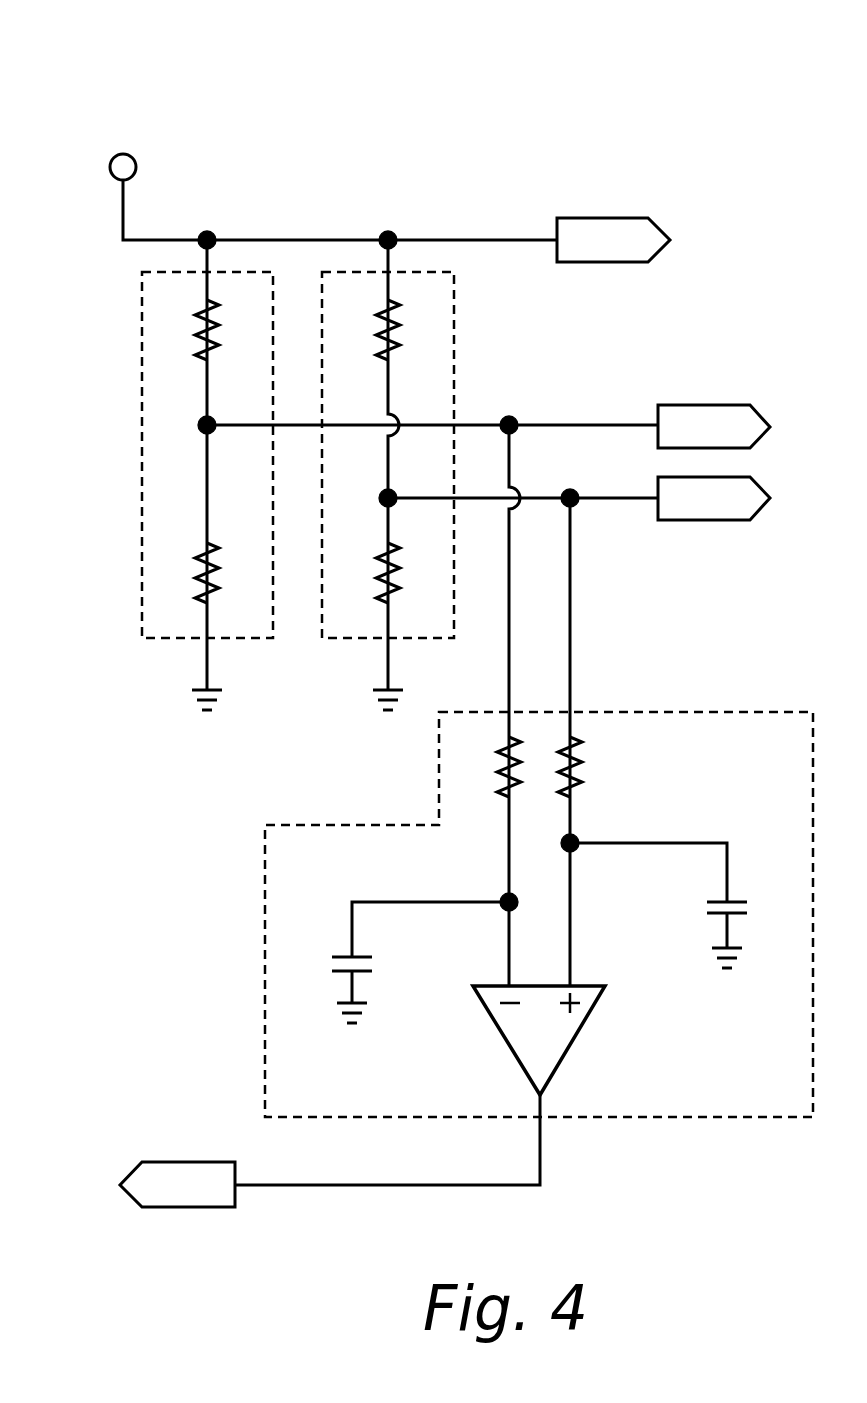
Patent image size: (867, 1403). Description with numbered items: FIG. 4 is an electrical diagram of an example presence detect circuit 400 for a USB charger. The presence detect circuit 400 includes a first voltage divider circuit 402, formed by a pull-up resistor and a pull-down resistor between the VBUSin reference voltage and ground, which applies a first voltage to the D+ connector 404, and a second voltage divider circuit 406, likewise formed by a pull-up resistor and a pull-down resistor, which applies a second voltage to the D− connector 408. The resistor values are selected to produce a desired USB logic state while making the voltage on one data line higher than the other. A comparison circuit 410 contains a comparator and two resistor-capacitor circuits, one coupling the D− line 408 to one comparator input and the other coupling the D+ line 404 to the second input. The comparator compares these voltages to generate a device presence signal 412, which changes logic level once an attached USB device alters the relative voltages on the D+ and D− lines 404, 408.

The presence detect circuit 400 is at (648, 115).
The first voltage divider circuit 402 is at (142, 411).
The D+ connector 404 is at (722, 405).
The second voltage divider circuit 406 is at (455, 368).
The D− connector 408 is at (727, 520).
The comparison circuit 410 is at (265, 918).
The device presence signal 412 is at (168, 1162).